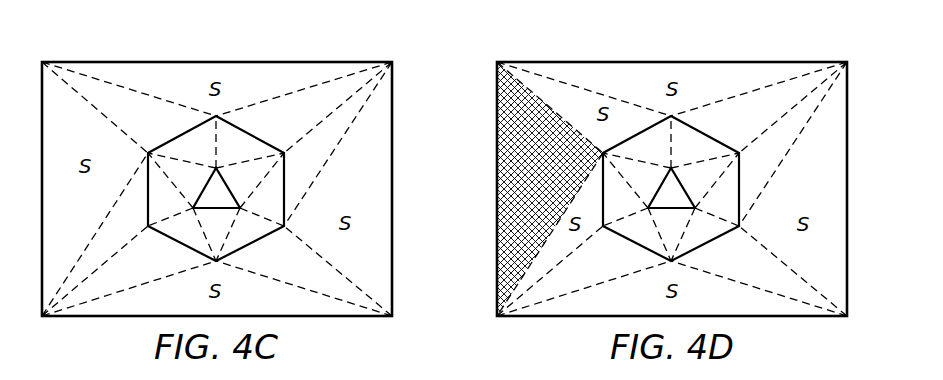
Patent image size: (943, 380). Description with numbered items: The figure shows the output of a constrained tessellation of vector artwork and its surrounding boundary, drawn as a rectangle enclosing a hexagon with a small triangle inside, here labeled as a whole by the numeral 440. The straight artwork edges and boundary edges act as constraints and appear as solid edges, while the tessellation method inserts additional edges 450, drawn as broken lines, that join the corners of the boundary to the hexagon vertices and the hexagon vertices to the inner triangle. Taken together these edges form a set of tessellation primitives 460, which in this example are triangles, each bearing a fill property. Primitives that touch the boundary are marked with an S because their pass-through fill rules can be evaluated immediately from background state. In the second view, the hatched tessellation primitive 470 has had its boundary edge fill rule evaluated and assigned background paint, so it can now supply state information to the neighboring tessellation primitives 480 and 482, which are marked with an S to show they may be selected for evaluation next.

In FIG. 4C, the array pattern 440 is at (217, 169).
In FIG. 4C, the additional edges 450 is at (108, 118).
In FIG. 4C, the tessellation primitives 460 is at (366, 100).
In FIG. 4D, the tessellation primitive 470 is at (503, 192).
In FIG. 4D, the tessellation primitive 480 is at (569, 98).
In FIG. 4D, the tessellation primitive 482 is at (557, 247).